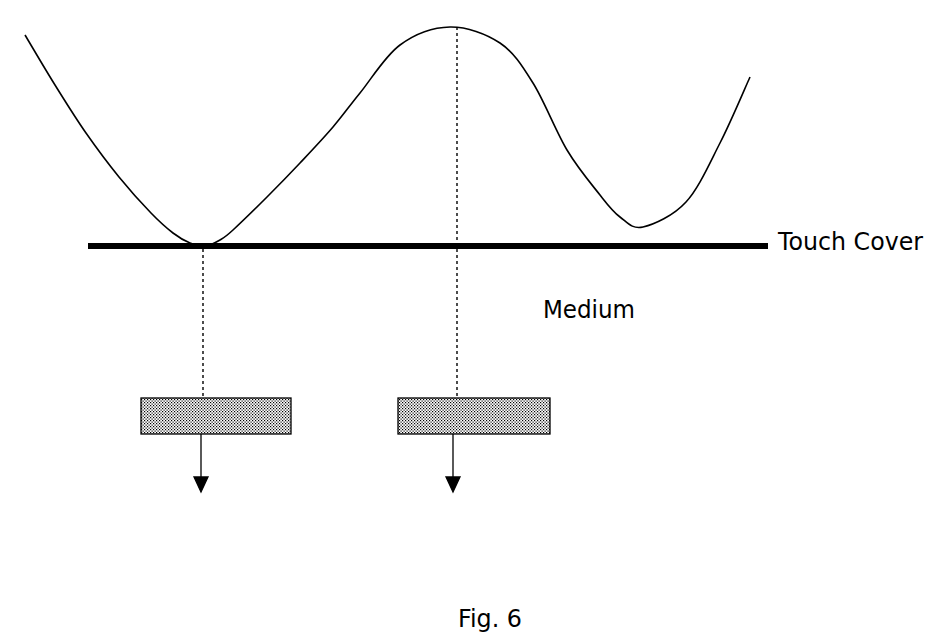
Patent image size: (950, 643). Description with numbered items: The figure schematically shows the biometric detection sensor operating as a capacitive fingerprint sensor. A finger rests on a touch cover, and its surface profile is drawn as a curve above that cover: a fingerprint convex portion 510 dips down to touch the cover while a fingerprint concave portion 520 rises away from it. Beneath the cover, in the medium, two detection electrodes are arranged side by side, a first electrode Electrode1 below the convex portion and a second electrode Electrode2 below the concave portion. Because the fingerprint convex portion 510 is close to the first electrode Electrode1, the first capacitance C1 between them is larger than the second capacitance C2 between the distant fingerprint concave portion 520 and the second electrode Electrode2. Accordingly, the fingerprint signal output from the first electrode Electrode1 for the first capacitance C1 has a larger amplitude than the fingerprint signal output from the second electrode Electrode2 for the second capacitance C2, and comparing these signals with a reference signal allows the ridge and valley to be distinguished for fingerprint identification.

The fingerprint convex portion 510 is at (387, 136).
The fingerprint concave portion 520 is at (430, 136).
The first capacitance C1 is at (155, 323).
The second capacitance C2 is at (415, 323).
The electrode 1 Electrode1 is at (216, 468).
The electrode 2 Electrode2 is at (474, 468).